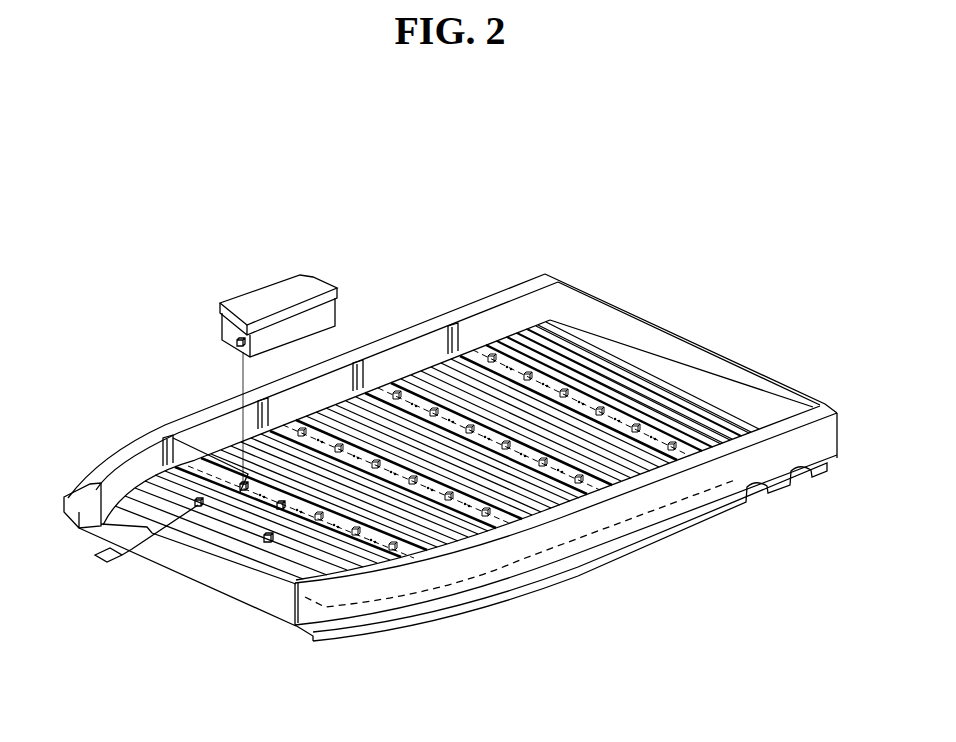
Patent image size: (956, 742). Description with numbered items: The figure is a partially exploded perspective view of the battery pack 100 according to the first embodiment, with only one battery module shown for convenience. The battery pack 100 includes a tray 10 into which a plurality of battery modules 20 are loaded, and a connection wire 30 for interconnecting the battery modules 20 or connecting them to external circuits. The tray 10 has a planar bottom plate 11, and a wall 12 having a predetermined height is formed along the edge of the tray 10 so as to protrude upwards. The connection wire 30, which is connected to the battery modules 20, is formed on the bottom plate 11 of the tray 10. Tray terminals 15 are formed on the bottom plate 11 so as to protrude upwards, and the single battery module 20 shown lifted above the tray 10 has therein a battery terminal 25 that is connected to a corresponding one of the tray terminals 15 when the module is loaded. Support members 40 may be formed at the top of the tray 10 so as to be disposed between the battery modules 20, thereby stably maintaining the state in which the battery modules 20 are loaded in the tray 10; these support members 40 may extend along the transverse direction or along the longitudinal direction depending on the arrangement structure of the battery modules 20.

The battery pack 100 is at (197, 201).
The tray 10 is at (158, 411).
The bottom plate 11 is at (266, 546).
The wall 12 is at (742, 467).
The tray terminals 15 is at (277, 512).
The battery module 20 is at (322, 276).
The battery terminal 25 is at (235, 344).
The connection wire 30 is at (437, 367).
The support members 40 is at (405, 574).